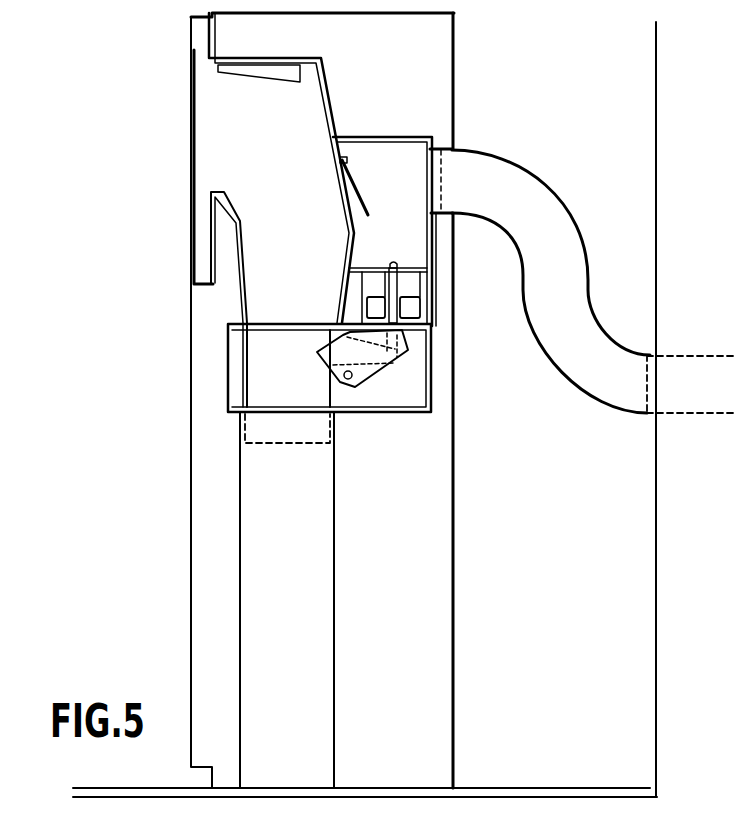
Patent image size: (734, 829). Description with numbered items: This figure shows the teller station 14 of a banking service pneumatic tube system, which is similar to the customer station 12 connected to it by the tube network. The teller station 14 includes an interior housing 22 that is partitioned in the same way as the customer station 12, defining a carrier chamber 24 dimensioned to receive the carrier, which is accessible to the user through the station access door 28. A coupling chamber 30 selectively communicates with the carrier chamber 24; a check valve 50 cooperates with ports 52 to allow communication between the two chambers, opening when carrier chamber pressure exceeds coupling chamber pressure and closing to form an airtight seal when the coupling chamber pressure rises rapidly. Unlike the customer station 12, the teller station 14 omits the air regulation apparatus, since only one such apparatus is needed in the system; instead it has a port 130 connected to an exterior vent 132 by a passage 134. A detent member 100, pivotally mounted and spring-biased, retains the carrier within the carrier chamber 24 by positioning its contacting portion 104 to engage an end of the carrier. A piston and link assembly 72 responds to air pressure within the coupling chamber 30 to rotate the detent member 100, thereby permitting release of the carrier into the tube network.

The customer station 12 is at (298, 594).
The teller station 14 is at (184, 104).
The interior housing 22 is at (453, 607).
The carrier chamber 24 is at (276, 141).
The station access door 28 is at (189, 177).
The coupling chamber 30 is at (402, 182).
The check valve 50 is at (400, 197).
The ports 52 is at (337, 202).
The piston and link assembly 72 is at (408, 285).
The detent member 100 is at (385, 372).
The contacting portion 104 is at (318, 338).
The port 130 is at (438, 178).
The exterior vent 132 is at (652, 382).
The passage 134 is at (566, 292).